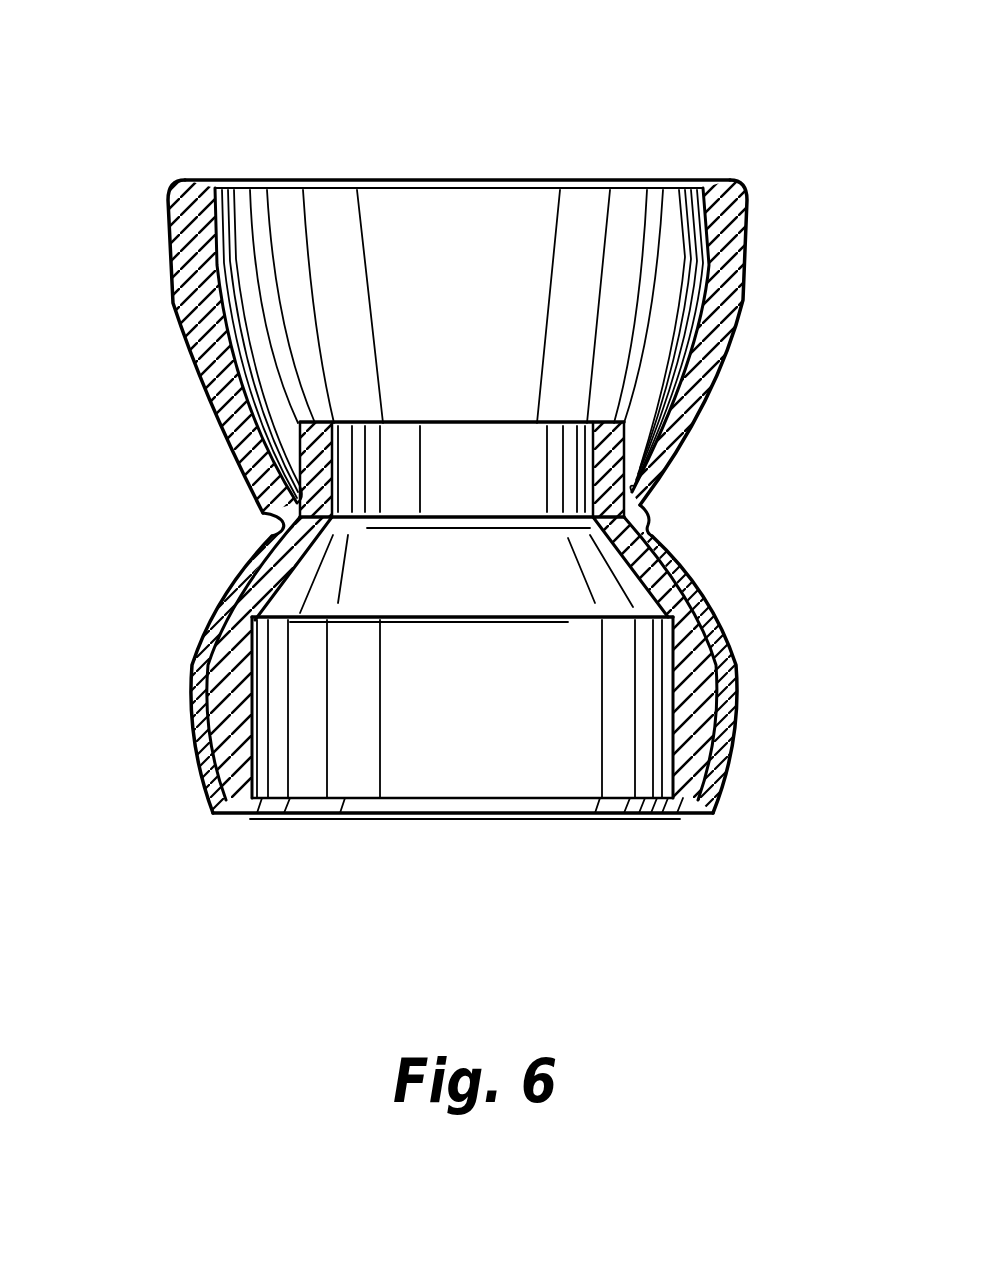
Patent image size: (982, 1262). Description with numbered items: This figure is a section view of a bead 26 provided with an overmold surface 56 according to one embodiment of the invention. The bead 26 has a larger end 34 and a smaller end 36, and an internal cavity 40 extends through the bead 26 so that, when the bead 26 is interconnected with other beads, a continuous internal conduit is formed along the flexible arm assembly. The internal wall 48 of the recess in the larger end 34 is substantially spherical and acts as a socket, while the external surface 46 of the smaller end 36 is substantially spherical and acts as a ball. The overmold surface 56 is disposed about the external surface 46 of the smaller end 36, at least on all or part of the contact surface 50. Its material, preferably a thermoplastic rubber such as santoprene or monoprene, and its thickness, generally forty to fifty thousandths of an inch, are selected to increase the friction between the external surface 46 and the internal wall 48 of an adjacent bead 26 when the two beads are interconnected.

The bead 26 is at (172, 492).
The larger end 34 is at (172, 320).
The smaller end 36 is at (225, 670).
The internal cavity 40 is at (480, 253).
The external surface 46 is at (207, 778).
The internal wall 48 is at (177, 287).
The contact surface 50 is at (728, 530).
The overmold surface 56 is at (217, 600).